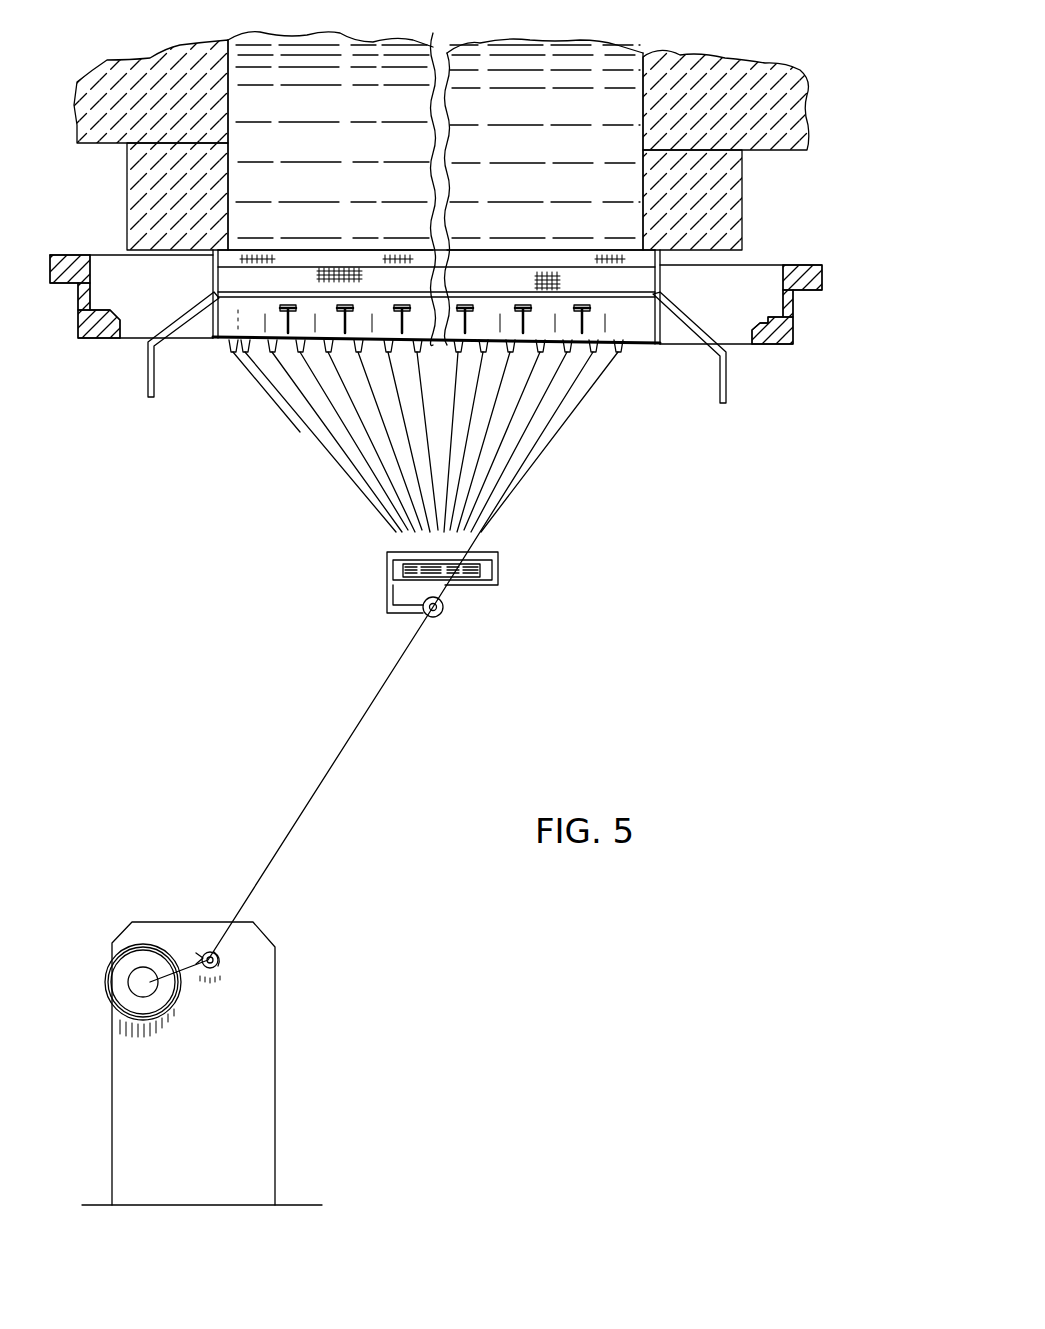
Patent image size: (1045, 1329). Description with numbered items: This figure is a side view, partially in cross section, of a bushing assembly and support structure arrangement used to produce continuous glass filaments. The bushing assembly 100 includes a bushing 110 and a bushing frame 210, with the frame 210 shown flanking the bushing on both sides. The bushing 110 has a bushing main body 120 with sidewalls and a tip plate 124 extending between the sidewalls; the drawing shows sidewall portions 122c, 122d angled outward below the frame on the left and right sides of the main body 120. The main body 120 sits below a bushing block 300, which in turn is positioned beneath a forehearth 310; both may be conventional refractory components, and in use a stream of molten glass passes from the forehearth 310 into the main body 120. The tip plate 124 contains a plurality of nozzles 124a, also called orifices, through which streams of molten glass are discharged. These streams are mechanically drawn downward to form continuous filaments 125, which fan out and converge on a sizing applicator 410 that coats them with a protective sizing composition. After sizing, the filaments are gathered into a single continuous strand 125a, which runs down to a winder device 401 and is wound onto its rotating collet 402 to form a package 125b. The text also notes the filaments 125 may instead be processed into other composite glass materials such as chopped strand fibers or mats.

The bushing assembly 100 is at (184, 468).
The bushing 110 is at (636, 376).
The bushing main body 120 is at (658, 345).
The left deflector plate 122c is at (213, 277).
The right deflector plate 122d is at (660, 283).
The tip plate 124 is at (235, 342).
The nozzles 124a is at (268, 388).
The continuous filaments 125 is at (508, 443).
The continuous strand 125a is at (318, 798).
The package 125b is at (148, 943).
The bushing frame 210 is at (78, 332).
The bushing block 300 is at (745, 193).
The forehearth 310 is at (771, 75).
The winder 401 is at (296, 948).
The rotating collet 402 is at (147, 985).
The sizing applicator 410 is at (453, 612).